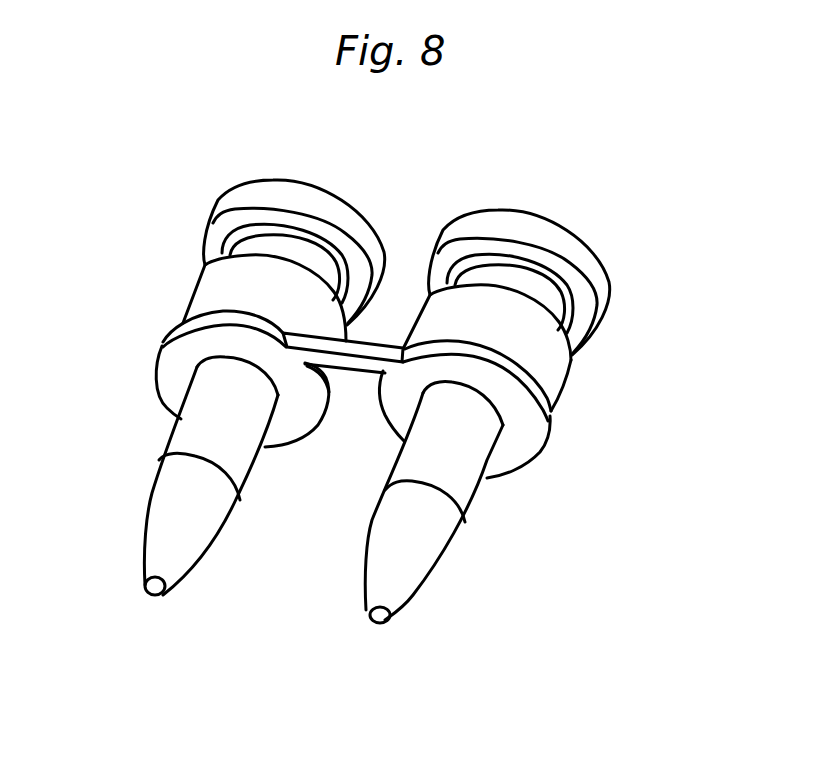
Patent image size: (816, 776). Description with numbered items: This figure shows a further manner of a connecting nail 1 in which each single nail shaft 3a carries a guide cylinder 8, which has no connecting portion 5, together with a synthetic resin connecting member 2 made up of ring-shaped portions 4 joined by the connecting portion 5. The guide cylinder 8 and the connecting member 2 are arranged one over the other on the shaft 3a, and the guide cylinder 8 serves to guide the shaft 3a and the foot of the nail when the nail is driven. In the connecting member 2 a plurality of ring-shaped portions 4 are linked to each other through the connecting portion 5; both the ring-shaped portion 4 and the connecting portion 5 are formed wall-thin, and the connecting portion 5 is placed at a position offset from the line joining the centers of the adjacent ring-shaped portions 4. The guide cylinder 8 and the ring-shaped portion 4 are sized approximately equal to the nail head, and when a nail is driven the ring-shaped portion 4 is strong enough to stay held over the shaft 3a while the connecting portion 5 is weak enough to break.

The connecting nail 1 is at (530, 197).
The connecting member 2 is at (549, 408).
The nail shaft 3a is at (198, 436).
The ring-shaped portion 4 is at (191, 364).
The connecting portion 5 is at (353, 363).
The guide cylinder 8 is at (227, 300).